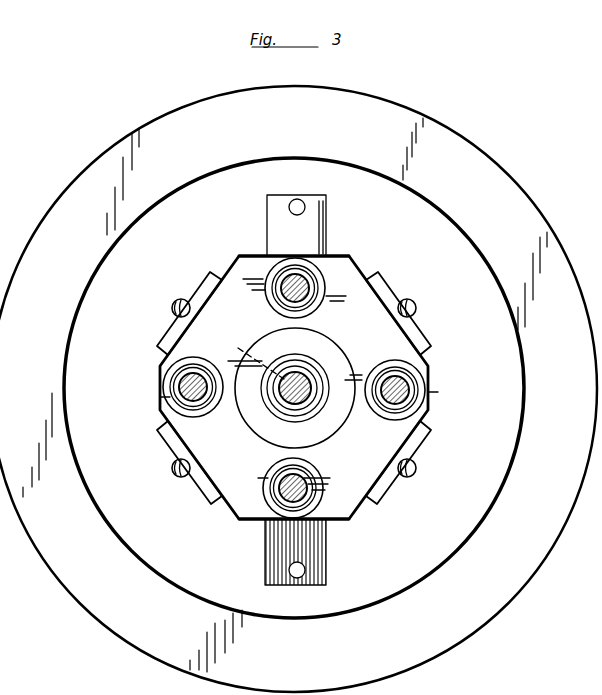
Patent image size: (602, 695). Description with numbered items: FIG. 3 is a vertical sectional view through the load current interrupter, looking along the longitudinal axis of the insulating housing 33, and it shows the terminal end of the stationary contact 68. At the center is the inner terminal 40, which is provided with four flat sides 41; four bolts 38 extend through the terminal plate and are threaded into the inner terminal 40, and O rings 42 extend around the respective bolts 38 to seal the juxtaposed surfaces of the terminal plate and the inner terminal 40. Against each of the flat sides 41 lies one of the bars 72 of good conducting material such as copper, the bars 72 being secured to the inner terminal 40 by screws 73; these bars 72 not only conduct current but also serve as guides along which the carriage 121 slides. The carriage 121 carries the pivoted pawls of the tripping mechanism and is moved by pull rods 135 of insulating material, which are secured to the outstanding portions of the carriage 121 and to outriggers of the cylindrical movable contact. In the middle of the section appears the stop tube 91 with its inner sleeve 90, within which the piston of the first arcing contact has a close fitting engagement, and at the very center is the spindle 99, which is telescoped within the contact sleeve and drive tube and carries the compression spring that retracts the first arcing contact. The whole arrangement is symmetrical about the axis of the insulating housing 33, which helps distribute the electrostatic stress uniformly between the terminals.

The insulating housing 33 is at (150, 130).
The stationary contact 68 is at (205, 247).
The inner terminal 40 is at (340, 254).
The flat sides 41 is at (240, 262).
The O rings 42 is at (312, 302).
The bolts 38 is at (284, 291).
The bars 72 is at (206, 288).
The screws 73 is at (170, 309).
The inner sleeve 90 is at (299, 364).
The stop tube 91 is at (323, 399).
The spindle 99 is at (244, 355).
The carriage 121 is at (322, 210).
The pull rods 135 is at (297, 199).